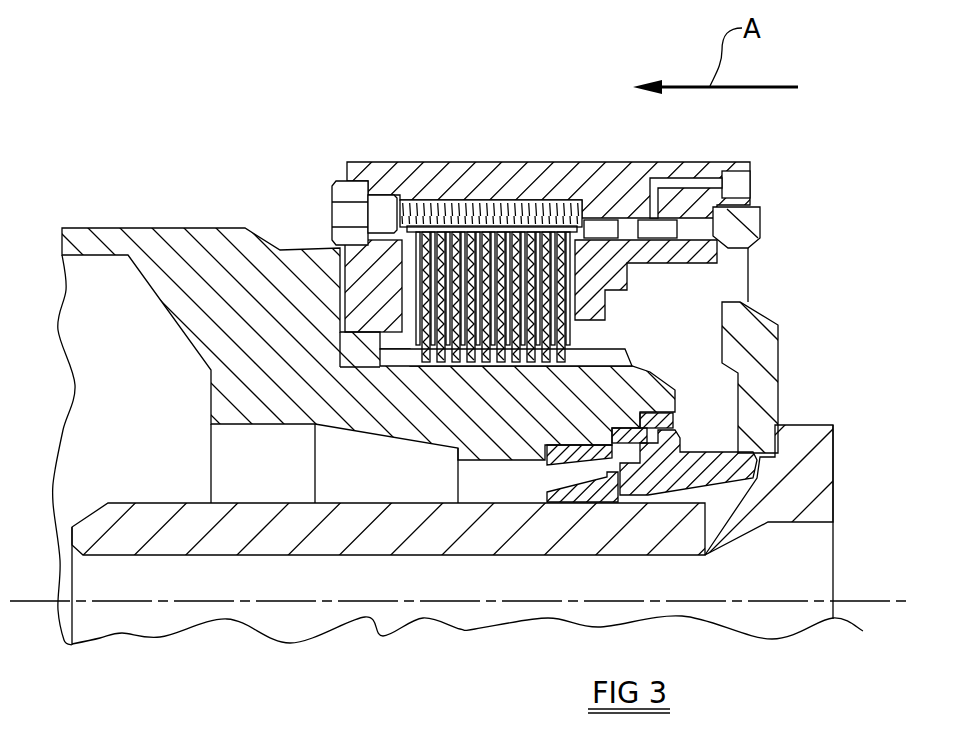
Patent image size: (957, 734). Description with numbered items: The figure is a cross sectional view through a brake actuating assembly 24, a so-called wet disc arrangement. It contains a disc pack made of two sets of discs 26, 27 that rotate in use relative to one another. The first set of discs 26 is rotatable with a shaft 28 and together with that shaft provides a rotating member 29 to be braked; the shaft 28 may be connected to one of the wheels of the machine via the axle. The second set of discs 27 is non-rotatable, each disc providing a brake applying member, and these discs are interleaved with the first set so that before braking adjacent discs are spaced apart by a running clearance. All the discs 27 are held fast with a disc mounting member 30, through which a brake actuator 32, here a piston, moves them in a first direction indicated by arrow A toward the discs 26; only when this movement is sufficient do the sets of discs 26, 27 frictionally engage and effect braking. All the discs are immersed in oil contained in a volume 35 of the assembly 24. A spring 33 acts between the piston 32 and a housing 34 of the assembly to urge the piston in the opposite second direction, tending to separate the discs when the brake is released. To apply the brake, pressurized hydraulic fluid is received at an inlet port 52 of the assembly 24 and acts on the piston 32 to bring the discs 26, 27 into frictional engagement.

The brake actuating assembly 24 is at (778, 288).
The first set of discs 26 is at (418, 340).
The second set of discs 27 is at (412, 287).
The shaft 28 is at (523, 420).
The rotating member 29 is at (461, 373).
The disc mounting member 30 is at (463, 203).
The brake actuator 32 is at (604, 331).
The spring 33 is at (502, 205).
The housing 34 is at (375, 162).
The volume 35 is at (777, 357).
The inlet port 52 is at (656, 183).